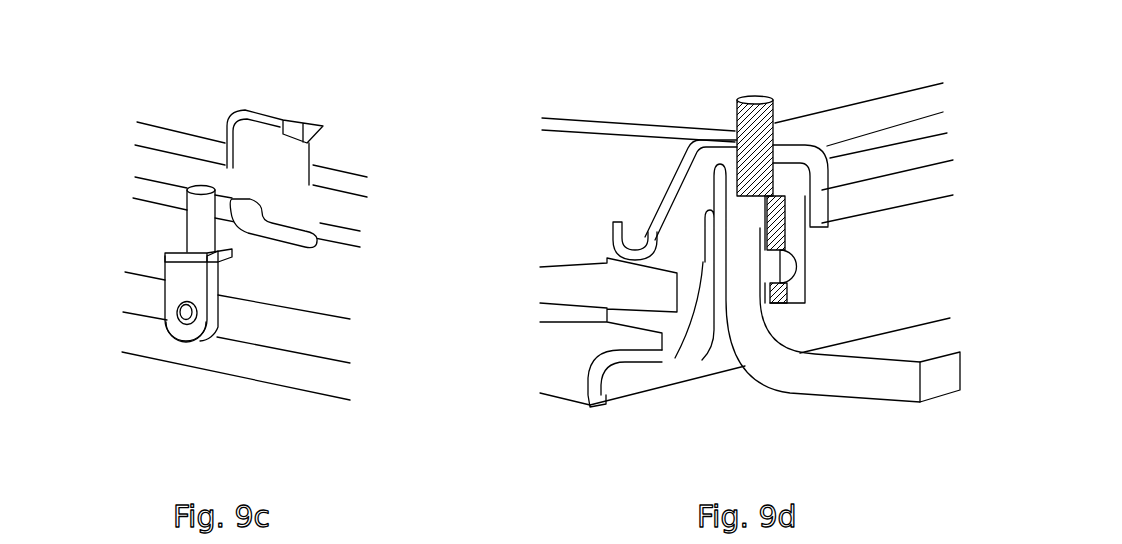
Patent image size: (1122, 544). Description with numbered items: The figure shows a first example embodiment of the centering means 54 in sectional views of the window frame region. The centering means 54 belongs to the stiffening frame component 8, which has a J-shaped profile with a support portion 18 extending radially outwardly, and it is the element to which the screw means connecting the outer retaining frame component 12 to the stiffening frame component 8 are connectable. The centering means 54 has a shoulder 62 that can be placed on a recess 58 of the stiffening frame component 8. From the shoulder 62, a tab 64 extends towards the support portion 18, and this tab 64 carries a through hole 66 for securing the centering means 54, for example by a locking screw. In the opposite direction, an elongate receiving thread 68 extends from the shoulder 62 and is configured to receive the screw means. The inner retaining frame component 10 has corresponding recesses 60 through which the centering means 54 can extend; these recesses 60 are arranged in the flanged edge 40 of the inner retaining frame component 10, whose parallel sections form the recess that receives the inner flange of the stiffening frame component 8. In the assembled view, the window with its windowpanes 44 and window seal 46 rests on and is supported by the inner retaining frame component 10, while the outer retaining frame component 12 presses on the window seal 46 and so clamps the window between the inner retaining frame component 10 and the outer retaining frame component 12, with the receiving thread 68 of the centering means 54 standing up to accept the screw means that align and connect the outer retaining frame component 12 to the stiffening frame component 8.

In FIG. 9C, the stiffening frame component 8 is at (325, 338).
In FIG. 9D, the stiffening frame component 8 is at (870, 383).
In FIG. 9D, the inner retaining frame component 10 is at (683, 372).
In FIG. 9D, the outer retaining frame component 12 is at (667, 190).
In FIG. 9C, the support portion 18 is at (208, 375).
In FIG. 9C, the flanged edge 40 is at (182, 110).
In FIG. 9D, the windowpanes 44 is at (585, 285).
In FIG. 9D, the window seal 46 is at (642, 363).
In FIG. 9C, the centering means 54 is at (232, 329).
In FIG. 9D, the centering means 54 is at (807, 267).
In FIG. 9C, the recess 58 is at (302, 232).
In FIG. 9C, the recess 60 is at (293, 130).
In FIG. 9C, the shoulder 62 is at (227, 275).
In FIG. 9D, the shoulder 62 is at (747, 218).
In FIG. 9C, the tab 64 is at (180, 330).
In FIG. 9D, the tab 64 is at (795, 222).
In FIG. 9C, the through hole 66 is at (183, 308).
In FIG. 9D, the through hole 66 is at (782, 262).
In FIG. 9C, the receiving thread 68 is at (197, 220).
In FIG. 9D, the receiving thread 68 is at (777, 118).